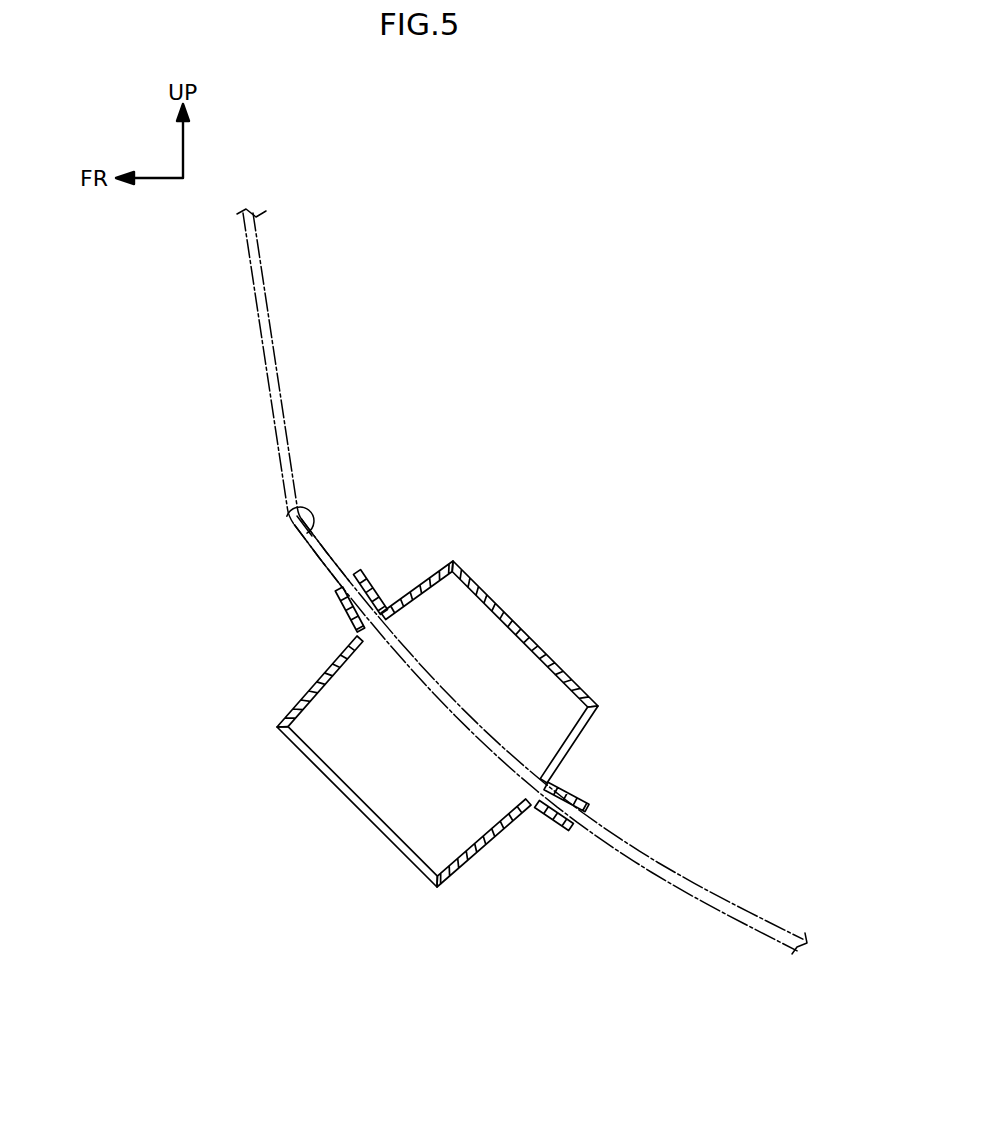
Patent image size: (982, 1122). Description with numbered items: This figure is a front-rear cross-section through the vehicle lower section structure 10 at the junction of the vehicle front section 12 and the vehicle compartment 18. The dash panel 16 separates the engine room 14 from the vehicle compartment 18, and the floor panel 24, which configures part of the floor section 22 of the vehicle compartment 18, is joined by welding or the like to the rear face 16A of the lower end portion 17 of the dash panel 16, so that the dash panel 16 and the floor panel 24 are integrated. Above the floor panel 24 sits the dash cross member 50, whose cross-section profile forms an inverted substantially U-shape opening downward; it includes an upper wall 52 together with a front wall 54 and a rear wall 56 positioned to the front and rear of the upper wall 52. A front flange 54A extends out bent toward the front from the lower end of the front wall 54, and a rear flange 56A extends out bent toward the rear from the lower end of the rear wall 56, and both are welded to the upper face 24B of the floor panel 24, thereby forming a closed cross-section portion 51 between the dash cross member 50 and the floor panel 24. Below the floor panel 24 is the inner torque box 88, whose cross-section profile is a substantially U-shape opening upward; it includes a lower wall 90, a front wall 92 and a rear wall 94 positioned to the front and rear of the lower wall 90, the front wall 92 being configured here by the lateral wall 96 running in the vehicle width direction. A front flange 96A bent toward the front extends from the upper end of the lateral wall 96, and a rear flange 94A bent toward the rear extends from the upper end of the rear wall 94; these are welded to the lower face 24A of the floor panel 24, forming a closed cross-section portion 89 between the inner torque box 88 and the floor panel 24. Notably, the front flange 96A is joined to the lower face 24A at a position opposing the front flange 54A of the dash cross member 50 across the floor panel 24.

The vehicle lower section structure 10 is at (694, 616).
The vehicle front section 12 is at (516, 330).
The engine room 14 is at (127, 434).
The vehicle compartment 18 is at (545, 434).
The dash panel 16 is at (274, 371).
The rear face 16A is at (287, 514).
The lower end portion 17 is at (327, 569).
The floor panel 24 is at (500, 707).
The floor section 22 is at (330, 557).
The lower face 24A is at (333, 592).
The upper face 24B is at (493, 725).
The dash cross member 50 is at (521, 658).
The closed cross-section portion 51 is at (502, 680).
The upper wall 52 is at (557, 660).
The front wall 54 is at (428, 572).
The front flange 54A is at (367, 587).
The rear wall 56 is at (603, 719).
The rear flange 56A is at (582, 798).
The inner torque box 88 is at (382, 759).
The closed cross-section portion 89 is at (418, 773).
The lower wall 90 is at (388, 838).
The rear wall 94 is at (497, 852).
The rear flange 94A is at (555, 817).
The lateral wall 96 is at (269, 681).
The front wall 92 is at (300, 684).
The front flange 96A is at (341, 603).